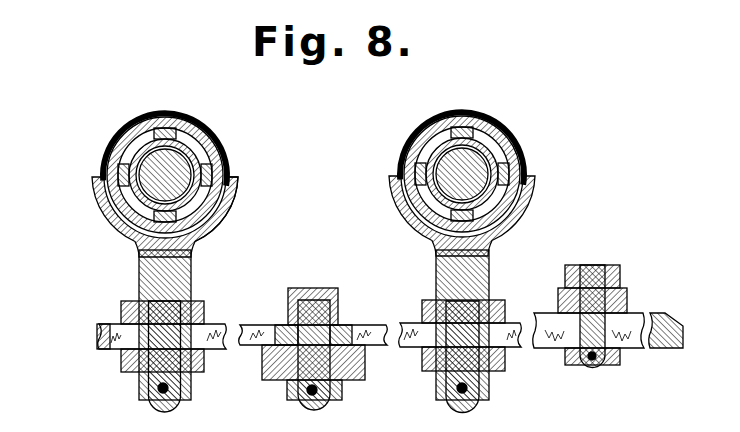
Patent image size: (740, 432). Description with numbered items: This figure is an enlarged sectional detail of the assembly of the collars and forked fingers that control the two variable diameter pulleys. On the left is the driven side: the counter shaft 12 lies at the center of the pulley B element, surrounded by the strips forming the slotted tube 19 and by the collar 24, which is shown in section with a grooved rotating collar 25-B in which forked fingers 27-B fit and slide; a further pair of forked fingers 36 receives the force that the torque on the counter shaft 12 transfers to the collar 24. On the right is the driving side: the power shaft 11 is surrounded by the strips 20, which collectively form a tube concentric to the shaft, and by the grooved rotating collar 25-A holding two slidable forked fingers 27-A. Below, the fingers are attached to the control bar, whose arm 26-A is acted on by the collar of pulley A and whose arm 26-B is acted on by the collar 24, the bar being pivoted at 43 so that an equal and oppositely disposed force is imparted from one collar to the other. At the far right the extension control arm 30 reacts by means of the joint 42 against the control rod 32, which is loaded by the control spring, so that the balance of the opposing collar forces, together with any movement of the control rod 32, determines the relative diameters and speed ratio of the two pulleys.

The power shaft 11 is at (500, 172).
The counter shaft 12 is at (195, 174).
The slotted tube 19 is at (180, 175).
The strip 20 is at (470, 148).
The collar 24 is at (131, 149).
The grooved rotating collar 25-A is at (535, 185).
The grooved rotating collar 25-B is at (236, 199).
The control bar arm 26-A is at (417, 325).
The control bar arm 26-B is at (253, 326).
The forked fingers 27-A is at (533, 200).
The forked fingers 27-B is at (231, 213).
The extension control arm 30 is at (531, 349).
The control rod 32 is at (628, 301).
The forked fingers 36 is at (98, 194).
The joint 42 is at (593, 367).
The pivot 43 is at (316, 294).